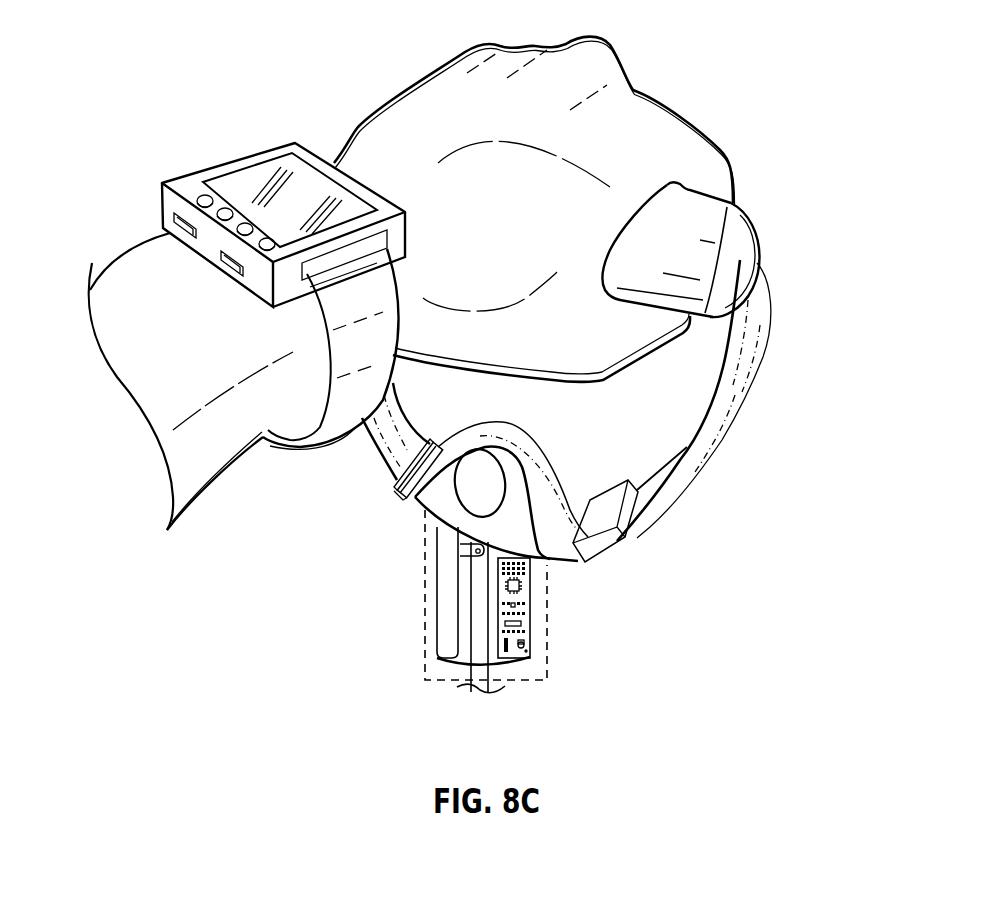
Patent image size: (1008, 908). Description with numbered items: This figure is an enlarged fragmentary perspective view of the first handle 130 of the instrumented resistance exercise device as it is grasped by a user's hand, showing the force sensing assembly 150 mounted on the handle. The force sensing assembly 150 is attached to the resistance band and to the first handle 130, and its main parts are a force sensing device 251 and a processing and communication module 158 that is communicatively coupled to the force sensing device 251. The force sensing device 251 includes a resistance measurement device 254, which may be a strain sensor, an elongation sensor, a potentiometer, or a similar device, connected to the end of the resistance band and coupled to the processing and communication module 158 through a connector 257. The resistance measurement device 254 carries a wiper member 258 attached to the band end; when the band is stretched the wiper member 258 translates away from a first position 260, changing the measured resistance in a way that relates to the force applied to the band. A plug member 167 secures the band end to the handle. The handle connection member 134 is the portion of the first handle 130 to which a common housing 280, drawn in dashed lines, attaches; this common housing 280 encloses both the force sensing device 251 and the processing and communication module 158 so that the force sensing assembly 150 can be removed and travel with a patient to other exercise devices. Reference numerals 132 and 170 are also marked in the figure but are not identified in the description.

The first handle 130 is at (702, 65).
The thumb cuff 132 is at (727, 215).
The handle connection member 134 is at (752, 353).
The plug member 167 is at (487, 472).
The wearable display device 170 is at (293, 143).
The first position 260 is at (418, 535).
The resistance measurement device 254 is at (443, 643).
The force sensing device 251 is at (415, 712).
The wiper member 258 is at (460, 550).
The connector 257 is at (447, 663).
The common housing 280 is at (548, 588).
The processing and communication module 158 is at (527, 648).
The force sensing assembly 150 is at (590, 718).